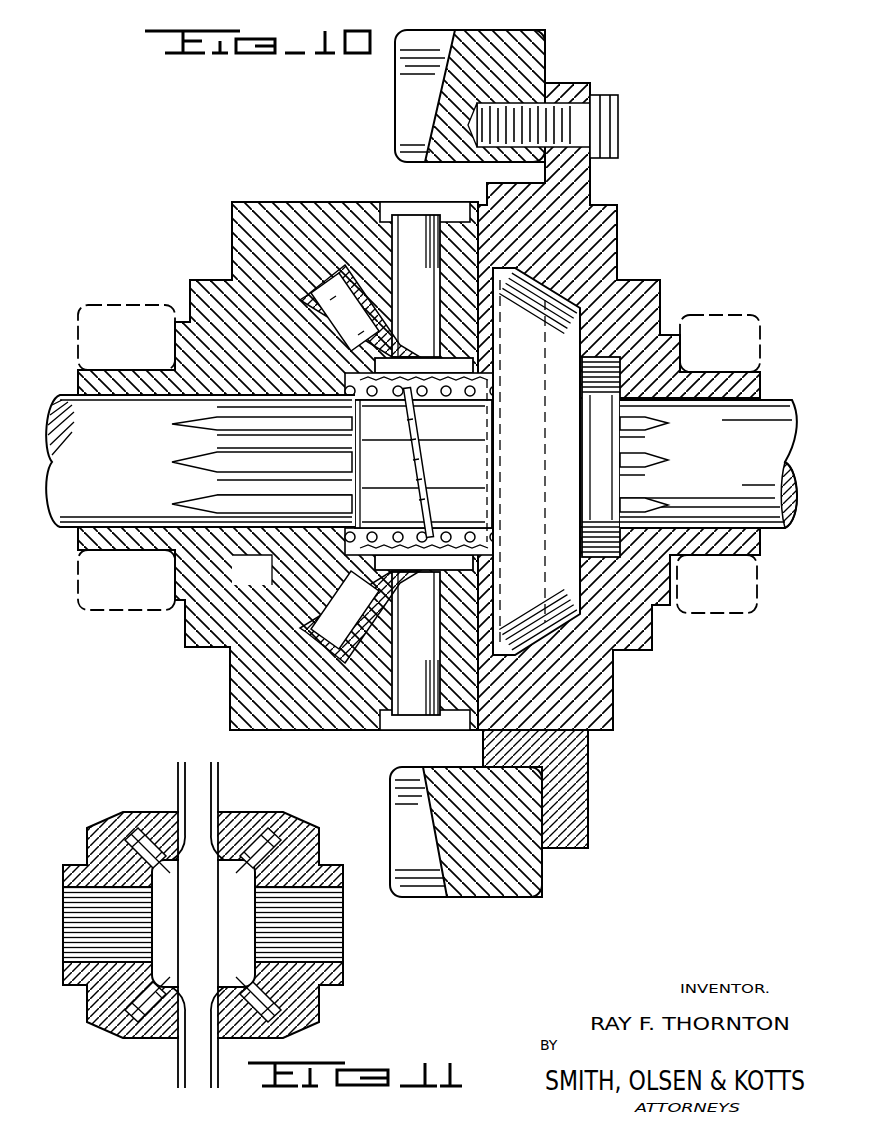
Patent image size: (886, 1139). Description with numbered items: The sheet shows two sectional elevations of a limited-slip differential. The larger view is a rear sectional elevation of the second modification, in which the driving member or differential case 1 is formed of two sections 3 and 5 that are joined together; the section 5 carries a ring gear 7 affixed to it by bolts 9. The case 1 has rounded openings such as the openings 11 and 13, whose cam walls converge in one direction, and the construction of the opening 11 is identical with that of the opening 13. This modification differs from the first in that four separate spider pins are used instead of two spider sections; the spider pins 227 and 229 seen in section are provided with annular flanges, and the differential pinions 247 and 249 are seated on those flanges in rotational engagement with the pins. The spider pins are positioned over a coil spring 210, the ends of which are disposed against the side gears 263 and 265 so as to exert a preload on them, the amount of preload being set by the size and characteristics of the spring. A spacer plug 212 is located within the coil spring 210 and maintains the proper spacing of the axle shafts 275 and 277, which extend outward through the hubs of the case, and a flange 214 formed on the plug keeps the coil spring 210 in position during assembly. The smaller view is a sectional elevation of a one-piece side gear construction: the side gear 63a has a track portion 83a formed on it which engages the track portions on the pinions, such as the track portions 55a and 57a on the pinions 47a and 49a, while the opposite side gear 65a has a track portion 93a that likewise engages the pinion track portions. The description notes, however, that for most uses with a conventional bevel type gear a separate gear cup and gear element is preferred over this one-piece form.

In FIG. 10, the differential case 1 is at (632, 260).
In FIG. 10, the case section 3 is at (250, 201).
In FIG. 10, the case section 5 is at (614, 718).
In FIG. 10, the ring gear 7 is at (525, 53).
In FIG. 10, the bolts 9 is at (612, 124).
In FIG. 10, the rounded opening 11 is at (385, 214).
In FIG. 10, the rounded opening 13 is at (395, 728).
In FIG. 10, the coil spring 210 is at (480, 527).
In FIG. 10, the spacer plug 212 is at (475, 469).
In FIG. 10, the flange 214 is at (415, 447).
In FIG. 10, the spider pin 227 is at (447, 311).
In FIG. 10, the spider pin 229 is at (445, 627).
In FIG. 10, the differential pinion 247 is at (345, 266).
In FIG. 10, the differential pinion 249 is at (375, 640).
In FIG. 10, the side gear 263 is at (242, 565).
In FIG. 10, the side gear 265 is at (562, 625).
In FIG. 10, the axle shaft 275 is at (140, 477).
In FIG. 10, the axle shaft 277 is at (742, 479).
In FIG. 11, the pinion 47a is at (265, 832).
In FIG. 11, the pinion 49a is at (172, 1028).
In FIG. 11, the track portion 55a is at (135, 833).
In FIG. 11, the track portion 57a is at (120, 1020).
In FIG. 11, the side gear 63a is at (86, 845).
In FIG. 11, the side gear 65a is at (362, 853).
In FIG. 11, the track portion 83a is at (150, 832).
In FIG. 11, the track portion 93a is at (318, 814).